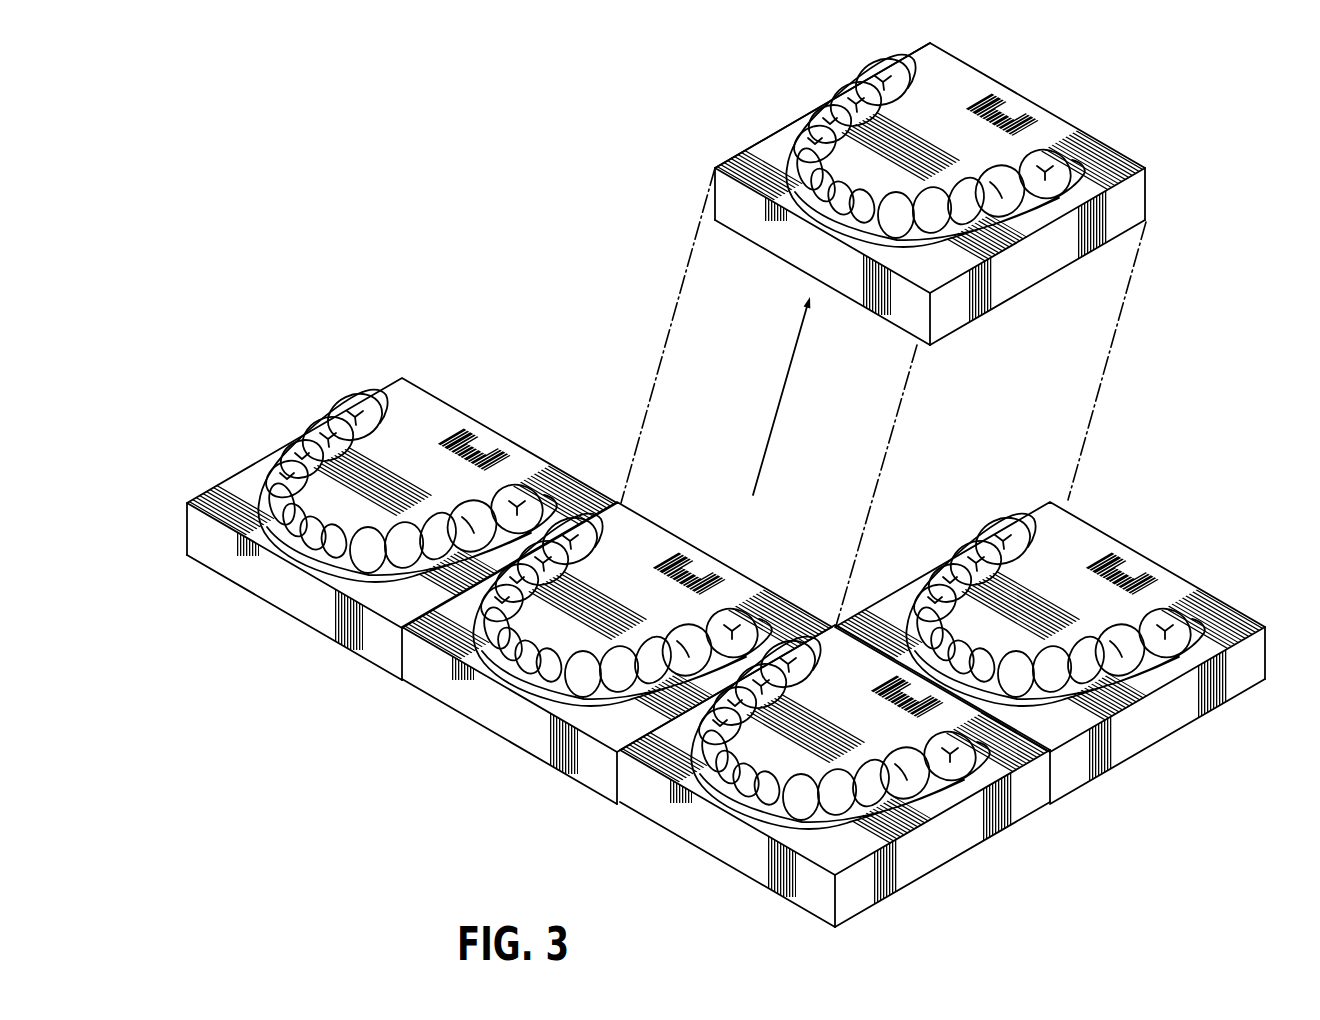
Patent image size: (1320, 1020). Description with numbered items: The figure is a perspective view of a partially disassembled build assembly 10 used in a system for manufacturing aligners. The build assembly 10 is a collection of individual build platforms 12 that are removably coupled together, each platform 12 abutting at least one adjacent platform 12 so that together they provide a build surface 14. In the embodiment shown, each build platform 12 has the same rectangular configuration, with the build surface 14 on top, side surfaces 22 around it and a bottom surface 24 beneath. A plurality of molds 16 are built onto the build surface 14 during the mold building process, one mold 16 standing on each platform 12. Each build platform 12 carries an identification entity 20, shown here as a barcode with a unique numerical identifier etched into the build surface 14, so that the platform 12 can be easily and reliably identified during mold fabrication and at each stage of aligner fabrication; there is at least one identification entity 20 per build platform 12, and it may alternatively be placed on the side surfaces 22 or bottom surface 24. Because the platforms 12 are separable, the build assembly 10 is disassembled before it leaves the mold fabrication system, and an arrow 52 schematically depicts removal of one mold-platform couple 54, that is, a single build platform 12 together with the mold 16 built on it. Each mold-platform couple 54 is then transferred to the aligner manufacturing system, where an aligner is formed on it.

The build assembly 10 is at (307, 208).
The build platform 12 is at (790, 124).
The build surface 14 is at (960, 158).
The mold 16 is at (1047, 147).
The identification entity 20 is at (968, 110).
The side surface 22 is at (1062, 256).
The bottom surface 24 is at (373, 663).
The arrow 52 is at (772, 430).
The mold-platform couple 54 is at (740, 156).